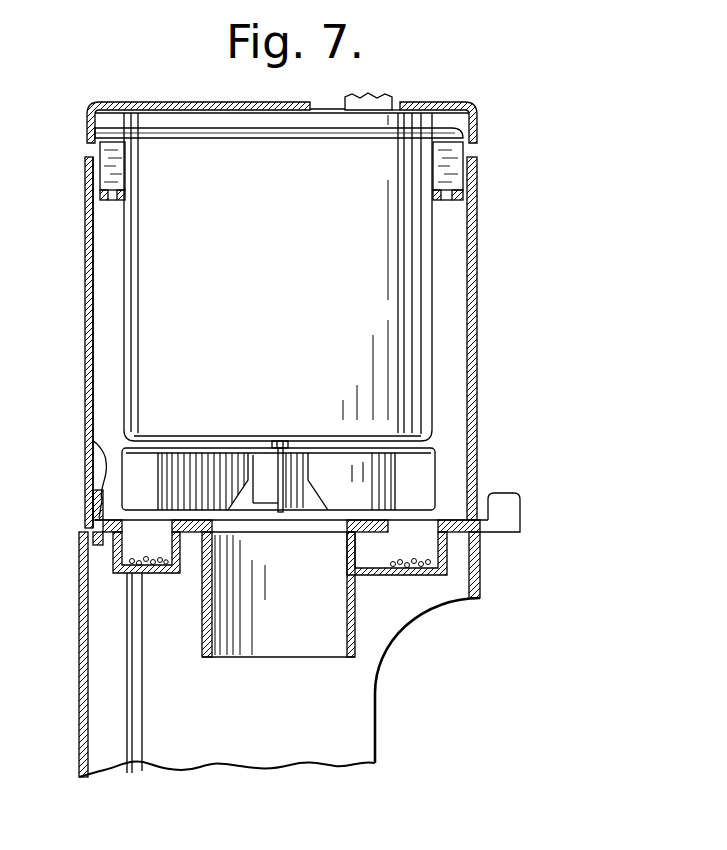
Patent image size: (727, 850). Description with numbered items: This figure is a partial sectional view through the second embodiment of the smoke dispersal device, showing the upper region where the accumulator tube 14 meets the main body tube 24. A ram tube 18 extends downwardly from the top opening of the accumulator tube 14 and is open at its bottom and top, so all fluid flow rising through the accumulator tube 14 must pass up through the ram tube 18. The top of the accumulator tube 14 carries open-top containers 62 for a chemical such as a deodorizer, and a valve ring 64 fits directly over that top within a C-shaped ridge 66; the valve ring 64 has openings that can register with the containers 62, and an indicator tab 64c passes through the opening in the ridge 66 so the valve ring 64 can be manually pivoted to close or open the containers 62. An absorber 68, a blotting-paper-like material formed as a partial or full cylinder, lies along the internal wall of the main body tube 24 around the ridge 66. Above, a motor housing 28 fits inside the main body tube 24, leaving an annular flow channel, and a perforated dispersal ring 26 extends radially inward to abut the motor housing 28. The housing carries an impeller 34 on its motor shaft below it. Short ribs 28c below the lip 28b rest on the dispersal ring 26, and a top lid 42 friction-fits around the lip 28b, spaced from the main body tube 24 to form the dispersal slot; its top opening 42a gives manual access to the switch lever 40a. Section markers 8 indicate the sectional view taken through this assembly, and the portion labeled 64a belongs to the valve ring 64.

The section line 8- 8 is at (62, 508).
The accumulator tube 14 is at (325, 747).
The ram tube 18 is at (356, 640).
The main body tube 24 is at (85, 306).
The dispersal ring 26 is at (450, 200).
The motor housing 28 is at (314, 284).
The lip 28b is at (442, 138).
The short ribs 28c is at (108, 170).
The impeller 34 is at (422, 472).
The switch lever 40a is at (368, 98).
The top lid 42 is at (470, 108).
The top opening 42a is at (316, 103).
The open-top containers 62 is at (122, 552).
The valve ring 64 is at (93, 515).
The base plate section 64a is at (338, 527).
The indicator tab 64c is at (508, 511).
The C-shaped ridge 66 is at (92, 440).
The absorber 68 is at (100, 361).